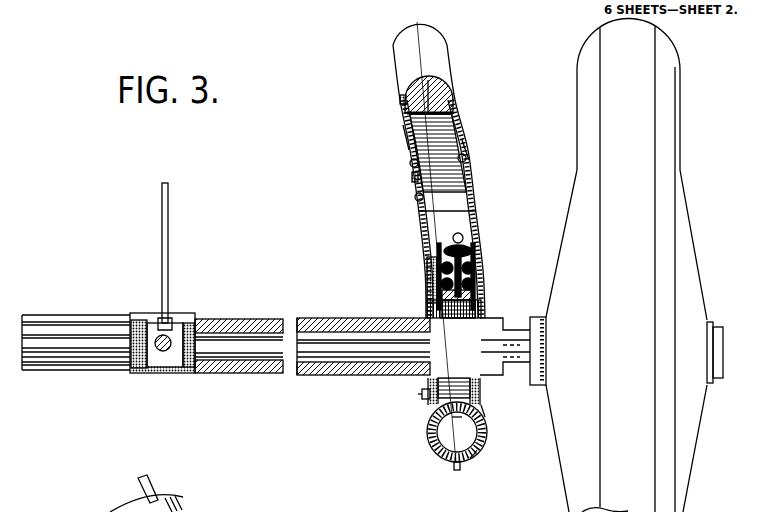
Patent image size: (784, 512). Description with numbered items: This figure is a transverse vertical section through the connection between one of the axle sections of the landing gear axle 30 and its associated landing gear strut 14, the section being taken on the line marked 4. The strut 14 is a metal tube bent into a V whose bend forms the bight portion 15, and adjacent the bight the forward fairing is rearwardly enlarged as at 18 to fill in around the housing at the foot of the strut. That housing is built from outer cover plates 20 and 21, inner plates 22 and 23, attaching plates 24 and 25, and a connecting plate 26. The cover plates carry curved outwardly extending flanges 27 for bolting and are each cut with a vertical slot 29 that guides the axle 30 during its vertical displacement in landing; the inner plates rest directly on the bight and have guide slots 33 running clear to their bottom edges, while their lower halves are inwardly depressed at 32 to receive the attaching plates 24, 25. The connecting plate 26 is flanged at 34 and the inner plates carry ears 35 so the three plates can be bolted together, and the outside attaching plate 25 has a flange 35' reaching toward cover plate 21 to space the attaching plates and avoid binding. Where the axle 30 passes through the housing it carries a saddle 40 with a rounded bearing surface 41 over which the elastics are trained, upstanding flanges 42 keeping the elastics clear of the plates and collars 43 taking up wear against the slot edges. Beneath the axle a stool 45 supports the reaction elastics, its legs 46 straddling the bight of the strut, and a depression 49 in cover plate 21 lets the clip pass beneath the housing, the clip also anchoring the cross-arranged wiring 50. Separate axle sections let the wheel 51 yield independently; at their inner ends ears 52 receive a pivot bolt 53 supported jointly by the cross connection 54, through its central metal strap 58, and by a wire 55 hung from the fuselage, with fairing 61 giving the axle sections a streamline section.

The section line 4- 4 is at (435, 251).
The landing gear strut 14 is at (408, 45).
The bight portion 15 is at (474, 450).
The rearwardly enlarged fairing portion 18 is at (447, 77).
The outer housing plate 20 is at (410, 140).
The outer housing plate 21 is at (468, 138).
The inner plate 22 is at (415, 177).
The inner plate 23 is at (475, 165).
The attaching plate 24 is at (425, 413).
The attaching plate 25 is at (480, 397).
The connecting plate 26 is at (427, 78).
The flange 27 is at (460, 466).
The vertical slot 29 is at (473, 163).
The landing gear axle 30 is at (335, 365).
The depressed portion 32 is at (428, 263).
The guide slot 33 is at (423, 210).
The flange 34 is at (405, 113).
The ear 35 is at (380, 85).
The flange 35' is at (510, 418).
The saddle 40 is at (483, 280).
The rounded bearing surface 41 is at (483, 290).
The upstanding flange 42 is at (477, 250).
The collar 43 is at (488, 323).
The stool 45 is at (440, 427).
The leg 46 is at (455, 417).
The depression 49 is at (486, 442).
The wiring 50 is at (152, 482).
The wheel 51 is at (645, 232).
The ear 52 is at (176, 352).
The pivot bolt 53 is at (166, 334).
The cross connection 54 is at (320, 311).
The wire 55 is at (165, 223).
The metal strap 58 is at (143, 373).
The fairing 61 is at (247, 320).